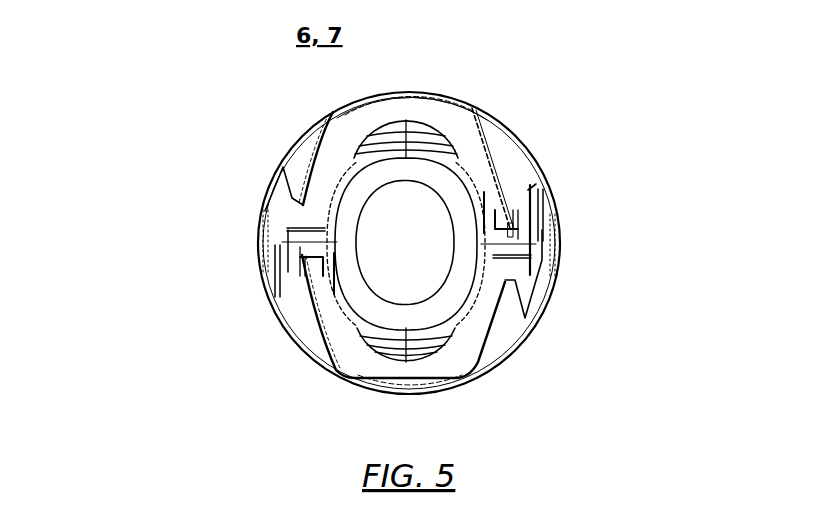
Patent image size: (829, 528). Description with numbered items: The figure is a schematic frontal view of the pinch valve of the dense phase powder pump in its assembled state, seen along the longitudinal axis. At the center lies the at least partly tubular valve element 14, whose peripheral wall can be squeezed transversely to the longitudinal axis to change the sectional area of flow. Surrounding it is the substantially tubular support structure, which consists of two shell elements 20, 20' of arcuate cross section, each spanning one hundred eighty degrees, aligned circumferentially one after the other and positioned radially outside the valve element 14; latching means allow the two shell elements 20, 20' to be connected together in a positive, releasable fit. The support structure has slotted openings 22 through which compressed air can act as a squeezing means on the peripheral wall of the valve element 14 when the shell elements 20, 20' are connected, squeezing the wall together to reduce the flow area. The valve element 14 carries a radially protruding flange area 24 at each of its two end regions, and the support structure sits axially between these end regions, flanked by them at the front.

The valve element 14 is at (417, 153).
The shell element 20 is at (287, 157).
The shell element 20' is at (302, 297).
The slotted openings 22 is at (307, 238).
The flange area 24 is at (455, 215).